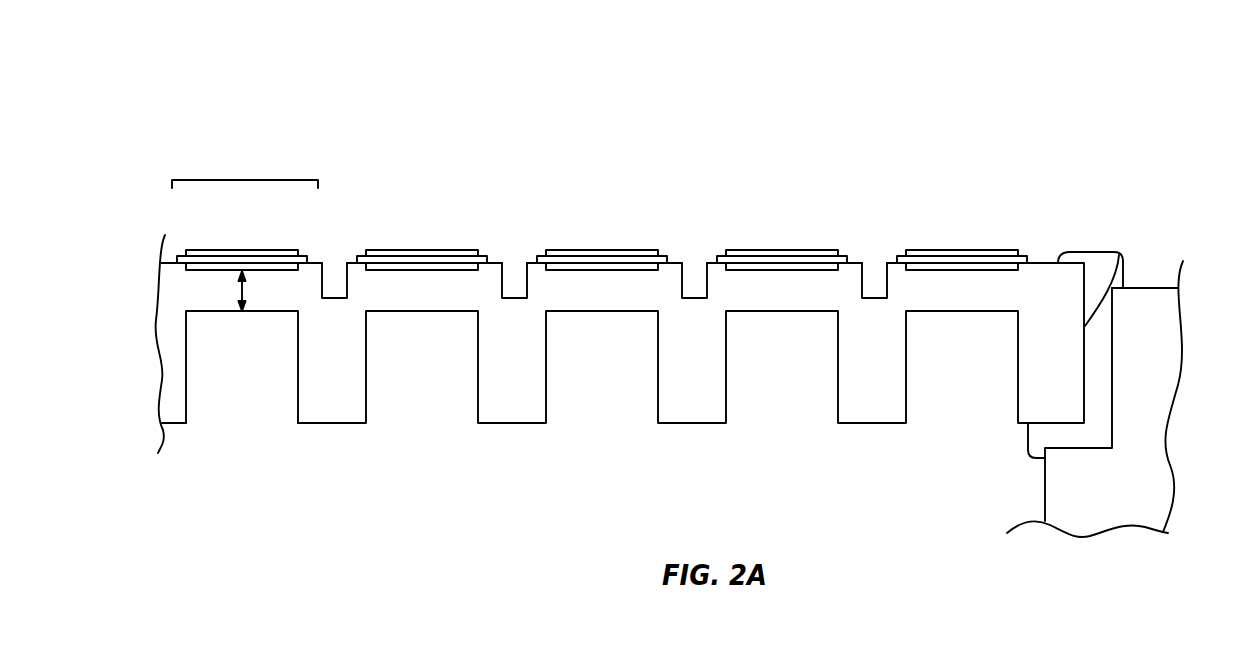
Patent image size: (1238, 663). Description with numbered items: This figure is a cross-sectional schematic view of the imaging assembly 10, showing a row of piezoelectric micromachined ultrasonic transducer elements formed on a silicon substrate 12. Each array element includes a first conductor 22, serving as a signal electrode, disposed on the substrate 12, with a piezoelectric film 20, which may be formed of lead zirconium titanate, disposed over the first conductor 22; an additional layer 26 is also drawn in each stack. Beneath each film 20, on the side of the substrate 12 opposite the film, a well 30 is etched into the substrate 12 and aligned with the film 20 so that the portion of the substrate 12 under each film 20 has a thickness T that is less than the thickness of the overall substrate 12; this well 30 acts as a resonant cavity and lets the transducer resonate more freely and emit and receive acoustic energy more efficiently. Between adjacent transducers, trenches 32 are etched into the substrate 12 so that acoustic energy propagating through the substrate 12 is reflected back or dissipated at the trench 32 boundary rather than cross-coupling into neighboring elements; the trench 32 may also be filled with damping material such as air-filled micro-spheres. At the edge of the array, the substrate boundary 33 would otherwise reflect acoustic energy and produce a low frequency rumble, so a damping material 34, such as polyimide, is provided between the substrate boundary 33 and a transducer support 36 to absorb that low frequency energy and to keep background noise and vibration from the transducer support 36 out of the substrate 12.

The imaging assembly 10 is at (226, 103).
The substrate 12 is at (342, 364).
The piezoelectric film 20 is at (197, 256).
The first conductor 22 is at (285, 268).
The hard mask layer 26 is at (272, 250).
The well 30 is at (187, 367).
The trench 32 is at (323, 275).
The substrate boundary 33 is at (1120, 255).
The damping material 34 is at (1087, 253).
The transducer support 36 is at (1157, 358).
The thickness T is at (237, 292).